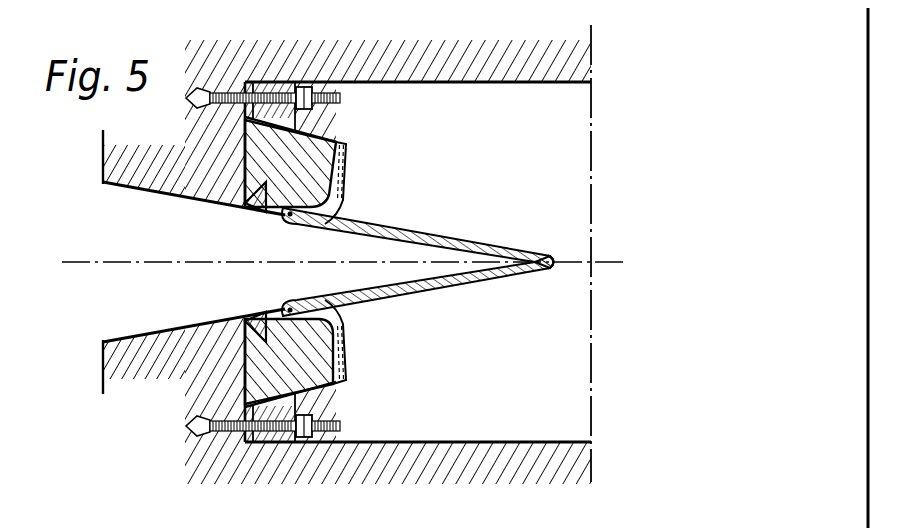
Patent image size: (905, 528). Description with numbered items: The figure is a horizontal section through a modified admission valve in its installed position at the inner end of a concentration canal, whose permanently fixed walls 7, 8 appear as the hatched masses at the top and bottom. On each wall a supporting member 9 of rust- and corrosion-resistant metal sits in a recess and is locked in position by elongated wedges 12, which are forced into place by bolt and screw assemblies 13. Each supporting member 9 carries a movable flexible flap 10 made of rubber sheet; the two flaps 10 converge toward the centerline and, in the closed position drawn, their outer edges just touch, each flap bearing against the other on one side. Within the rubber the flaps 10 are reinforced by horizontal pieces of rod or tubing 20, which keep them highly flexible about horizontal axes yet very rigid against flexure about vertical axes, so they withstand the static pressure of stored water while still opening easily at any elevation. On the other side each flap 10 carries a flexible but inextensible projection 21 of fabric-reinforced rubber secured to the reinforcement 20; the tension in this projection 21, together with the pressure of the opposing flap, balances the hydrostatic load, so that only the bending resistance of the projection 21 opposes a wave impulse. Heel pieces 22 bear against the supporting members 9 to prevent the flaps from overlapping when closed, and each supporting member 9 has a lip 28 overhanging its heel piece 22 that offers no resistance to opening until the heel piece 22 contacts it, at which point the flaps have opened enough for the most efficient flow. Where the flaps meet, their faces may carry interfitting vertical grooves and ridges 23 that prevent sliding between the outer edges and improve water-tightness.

The wall 7 is at (162, 194).
The wall 8 is at (156, 332).
The supporting member 9 is at (263, 312).
The flap 10 is at (460, 238).
The elongated wedge 12 is at (269, 80).
The bolt and screw assembly 13 is at (308, 102).
The reenforcement 20 is at (428, 240).
The projection 21 is at (346, 185).
The heel piece 22 is at (299, 273).
The grooves and ridges 23 is at (533, 260).
The lip 28 is at (290, 214).